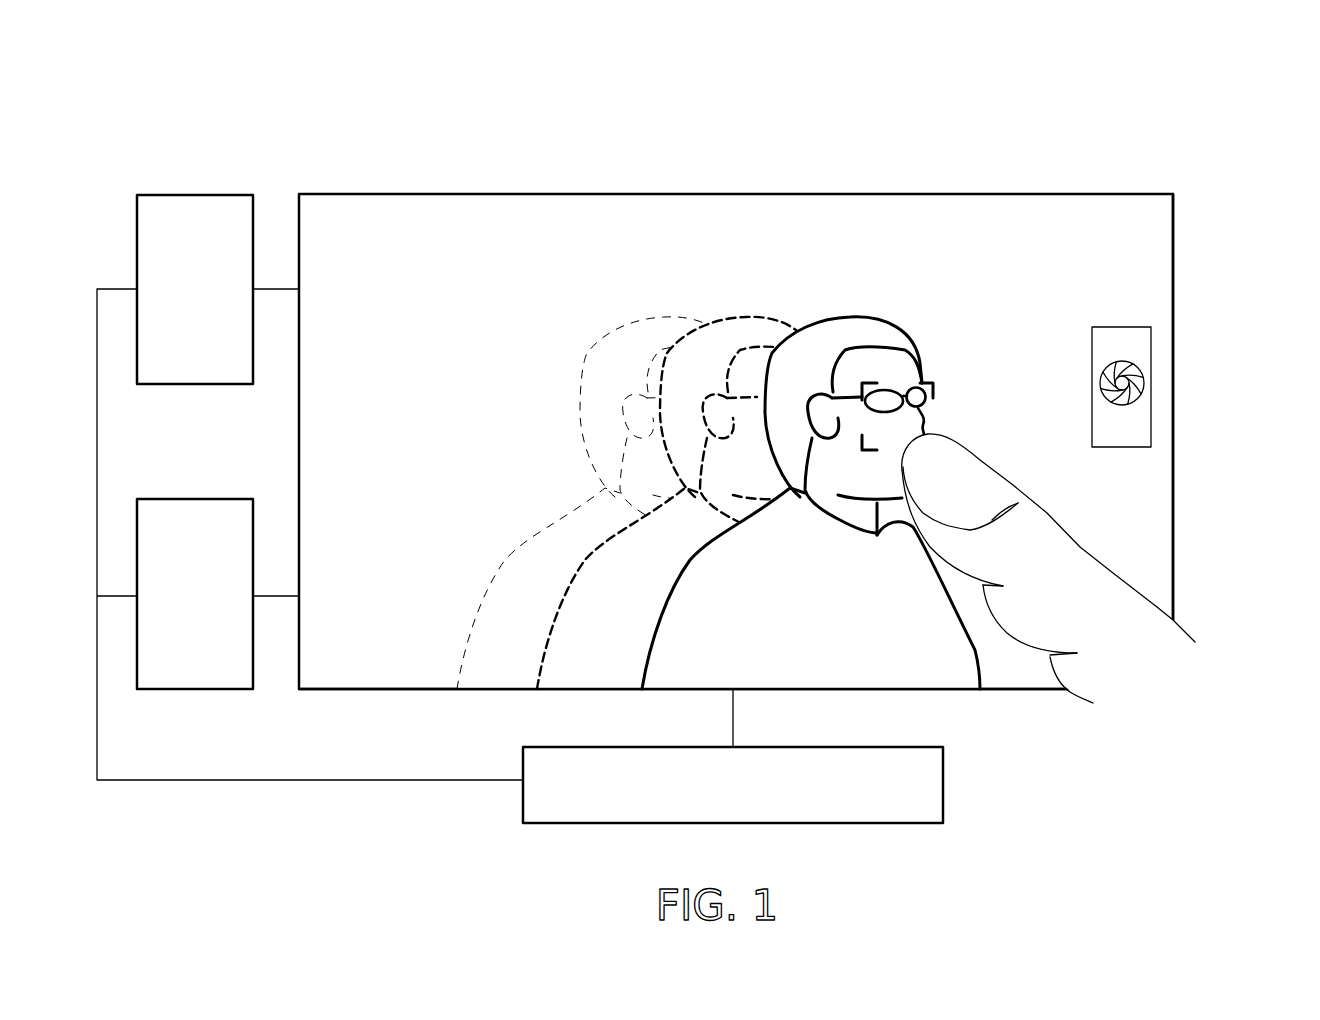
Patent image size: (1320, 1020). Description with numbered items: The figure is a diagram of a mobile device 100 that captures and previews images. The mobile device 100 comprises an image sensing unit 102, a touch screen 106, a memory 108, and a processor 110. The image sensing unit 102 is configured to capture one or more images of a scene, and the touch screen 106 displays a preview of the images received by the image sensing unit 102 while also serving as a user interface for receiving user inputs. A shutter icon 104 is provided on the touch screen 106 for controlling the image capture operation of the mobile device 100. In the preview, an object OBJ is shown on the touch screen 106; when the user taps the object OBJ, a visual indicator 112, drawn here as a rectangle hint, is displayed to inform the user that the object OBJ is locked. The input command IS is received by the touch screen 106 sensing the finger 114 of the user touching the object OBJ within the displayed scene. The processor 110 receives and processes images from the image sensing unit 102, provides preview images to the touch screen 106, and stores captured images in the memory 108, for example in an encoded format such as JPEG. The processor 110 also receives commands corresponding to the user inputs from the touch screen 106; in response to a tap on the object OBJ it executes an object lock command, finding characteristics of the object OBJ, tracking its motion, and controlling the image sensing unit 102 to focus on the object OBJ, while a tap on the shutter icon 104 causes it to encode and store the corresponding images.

The mobile device 100 is at (1219, 95).
The image sensing unit 102 is at (222, 194).
The shutter icon 104 is at (1152, 347).
The touch screen 106 is at (830, 194).
The memory 108 is at (193, 498).
The processor 110 is at (943, 788).
The visual indicator 112 is at (931, 381).
The finger 114 is at (1152, 607).
The object OBJ is at (853, 327).
The input command IS is at (749, 718).